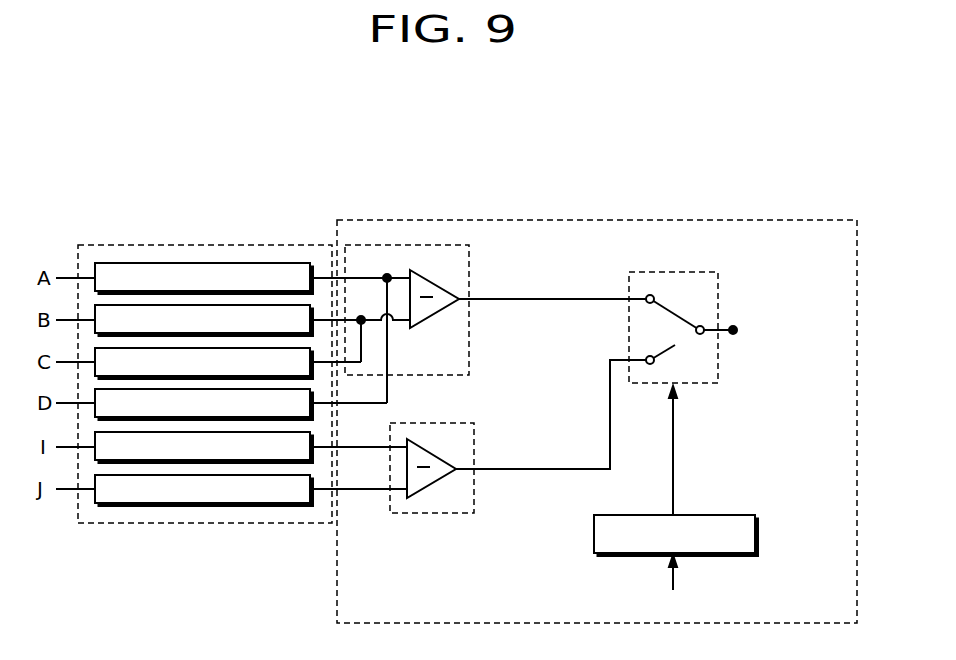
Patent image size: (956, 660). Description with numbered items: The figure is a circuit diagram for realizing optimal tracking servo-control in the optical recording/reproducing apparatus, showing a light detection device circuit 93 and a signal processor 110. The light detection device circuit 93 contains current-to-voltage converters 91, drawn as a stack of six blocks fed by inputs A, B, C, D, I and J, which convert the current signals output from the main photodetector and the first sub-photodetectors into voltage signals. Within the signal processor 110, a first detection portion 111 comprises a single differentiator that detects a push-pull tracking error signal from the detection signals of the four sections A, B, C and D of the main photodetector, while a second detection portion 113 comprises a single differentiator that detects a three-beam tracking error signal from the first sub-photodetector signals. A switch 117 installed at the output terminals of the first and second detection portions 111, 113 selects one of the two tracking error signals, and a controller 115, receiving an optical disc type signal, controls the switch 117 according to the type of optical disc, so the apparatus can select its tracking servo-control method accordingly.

The current-to-voltage converters 91 is at (288, 262).
The light detection device circuit 93 is at (272, 523).
The signal processor 110 is at (572, 220).
The first detection portion 111 is at (469, 267).
The second detection portion 113 is at (425, 513).
The controller 115 is at (594, 535).
The switch 117 is at (680, 270).